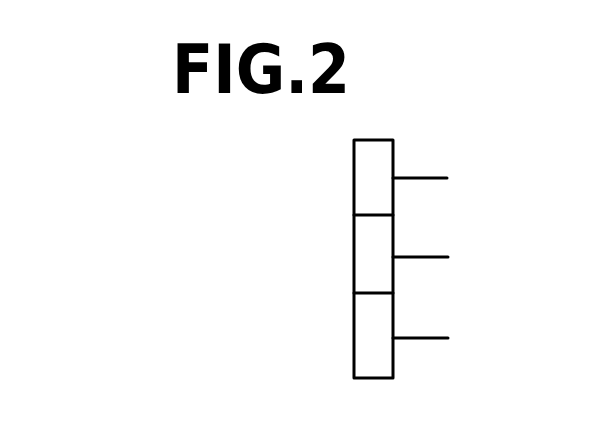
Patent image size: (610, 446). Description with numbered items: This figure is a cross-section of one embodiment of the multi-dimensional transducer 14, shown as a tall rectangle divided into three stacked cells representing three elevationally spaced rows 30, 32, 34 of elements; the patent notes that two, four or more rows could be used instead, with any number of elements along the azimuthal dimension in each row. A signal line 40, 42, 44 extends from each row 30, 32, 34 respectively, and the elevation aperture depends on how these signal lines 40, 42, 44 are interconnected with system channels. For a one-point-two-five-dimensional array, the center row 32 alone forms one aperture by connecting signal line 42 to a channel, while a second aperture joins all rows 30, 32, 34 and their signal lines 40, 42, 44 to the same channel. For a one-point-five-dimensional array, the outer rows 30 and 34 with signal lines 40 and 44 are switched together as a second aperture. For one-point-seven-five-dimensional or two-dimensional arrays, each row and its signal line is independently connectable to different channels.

The multi-dimensional transducer 14 is at (375, 140).
The elevationally spaced row 30 is at (353, 158).
The center row 32 is at (353, 240).
The elevationally spaced row 34 is at (353, 335).
The signal line 40 is at (417, 178).
The signal line 42 is at (427, 257).
The signal line 44 is at (428, 338).